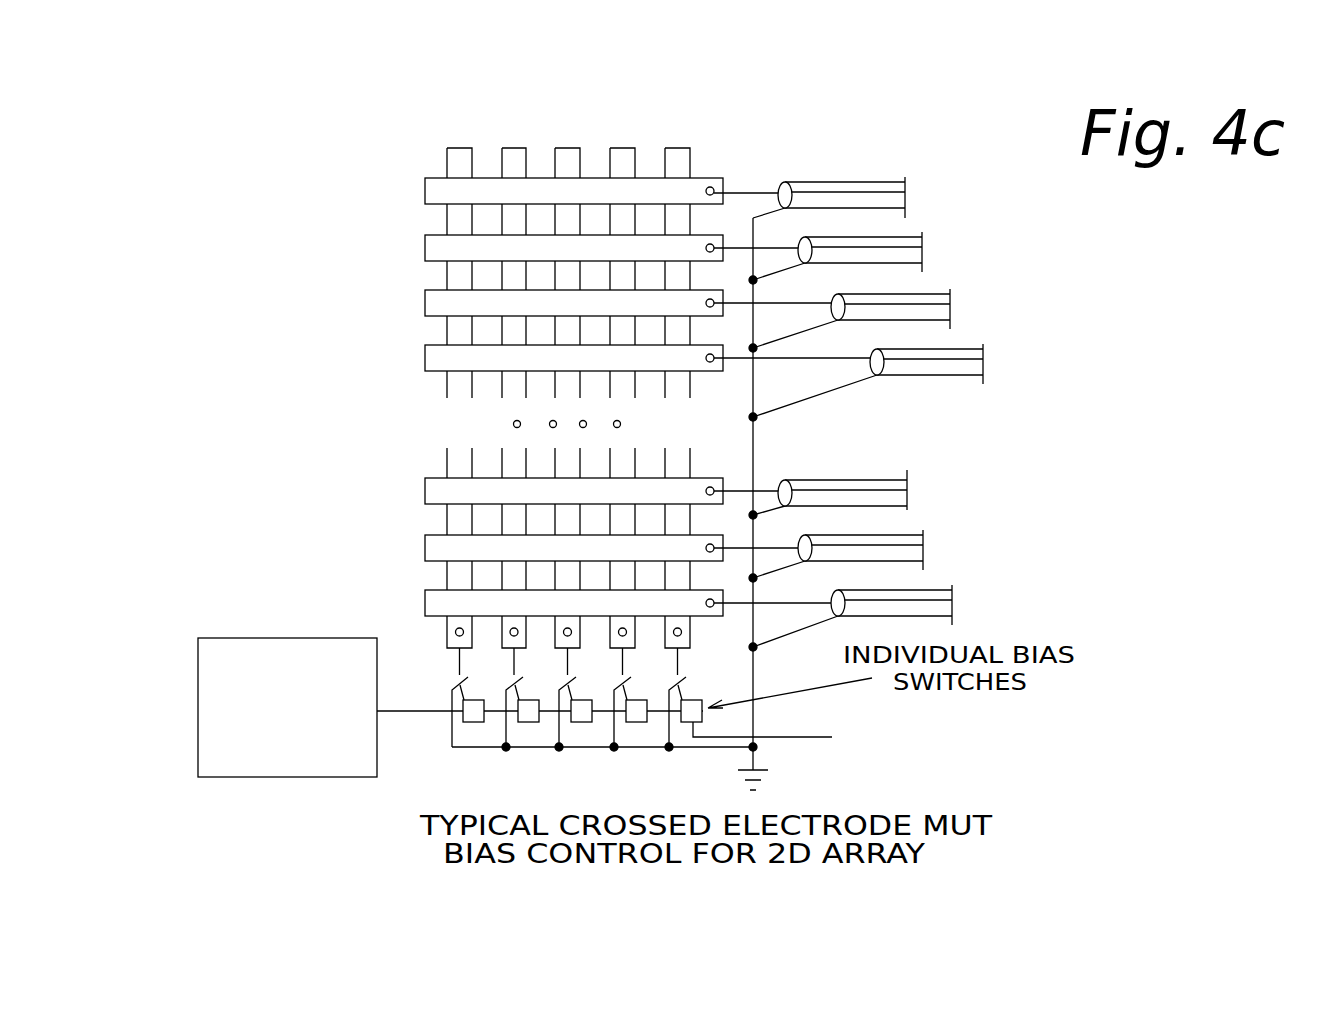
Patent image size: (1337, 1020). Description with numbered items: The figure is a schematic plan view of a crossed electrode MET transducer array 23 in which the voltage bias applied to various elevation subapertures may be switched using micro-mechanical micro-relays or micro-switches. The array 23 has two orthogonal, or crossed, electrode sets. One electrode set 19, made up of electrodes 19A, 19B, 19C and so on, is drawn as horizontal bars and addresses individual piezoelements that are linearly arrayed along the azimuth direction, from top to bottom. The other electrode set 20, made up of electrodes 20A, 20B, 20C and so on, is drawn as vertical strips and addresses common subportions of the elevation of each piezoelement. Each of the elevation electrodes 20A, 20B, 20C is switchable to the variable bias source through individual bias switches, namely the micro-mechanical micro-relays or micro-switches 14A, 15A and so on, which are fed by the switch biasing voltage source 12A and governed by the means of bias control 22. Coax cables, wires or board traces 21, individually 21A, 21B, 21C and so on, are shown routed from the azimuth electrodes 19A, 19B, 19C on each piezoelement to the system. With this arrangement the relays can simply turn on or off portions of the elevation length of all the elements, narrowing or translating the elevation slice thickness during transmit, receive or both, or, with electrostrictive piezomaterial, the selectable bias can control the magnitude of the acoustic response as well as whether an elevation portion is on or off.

The electrode set 20 is at (702, 113).
The elevation electrode 20A is at (455, 148).
The elevation electrode 20B is at (514, 148).
The elevation electrode 20C is at (570, 148).
The electrode set 19 is at (375, 602).
The azimuth electrode 19A is at (425, 206).
The azimuth electrode 19B is at (425, 261).
The azimuth electrode 19C is at (425, 316).
The coax cables 21 is at (995, 168).
The coax cable 21A is at (843, 182).
The coax cable 21B is at (908, 233).
The coax cable 21C is at (922, 293).
The bias control 22 is at (265, 638).
The transducer array 23 is at (752, 153).
The micro-mechanical micro-relay 14A is at (475, 722).
The micro-mechanical micro-relay 15A is at (530, 722).
The bias voltage source 12A is at (832, 737).